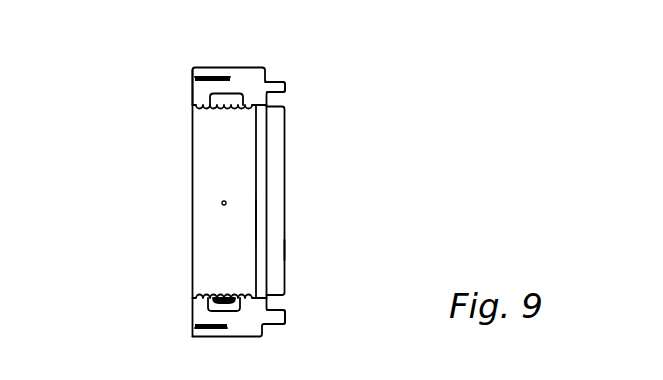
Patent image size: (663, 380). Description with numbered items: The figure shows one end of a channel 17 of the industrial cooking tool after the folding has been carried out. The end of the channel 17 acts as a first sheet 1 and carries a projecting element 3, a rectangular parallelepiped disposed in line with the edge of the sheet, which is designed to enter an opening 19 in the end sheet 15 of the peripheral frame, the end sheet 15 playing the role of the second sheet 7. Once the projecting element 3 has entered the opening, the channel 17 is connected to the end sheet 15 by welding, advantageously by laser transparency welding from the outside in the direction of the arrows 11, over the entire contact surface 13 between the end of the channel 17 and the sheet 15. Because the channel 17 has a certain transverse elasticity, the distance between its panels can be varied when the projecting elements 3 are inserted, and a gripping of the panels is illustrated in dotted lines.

The first sheet 1 is at (157, 212).
The projecting element 3 is at (245, 68).
The second sheet 7 is at (211, 78).
The arrows / welding surface 11 is at (267, 157).
The contact surface 13 is at (258, 218).
The end sheet 15 is at (285, 86).
The channel 17 is at (193, 80).
The sheet / openings 19 is at (285, 251).